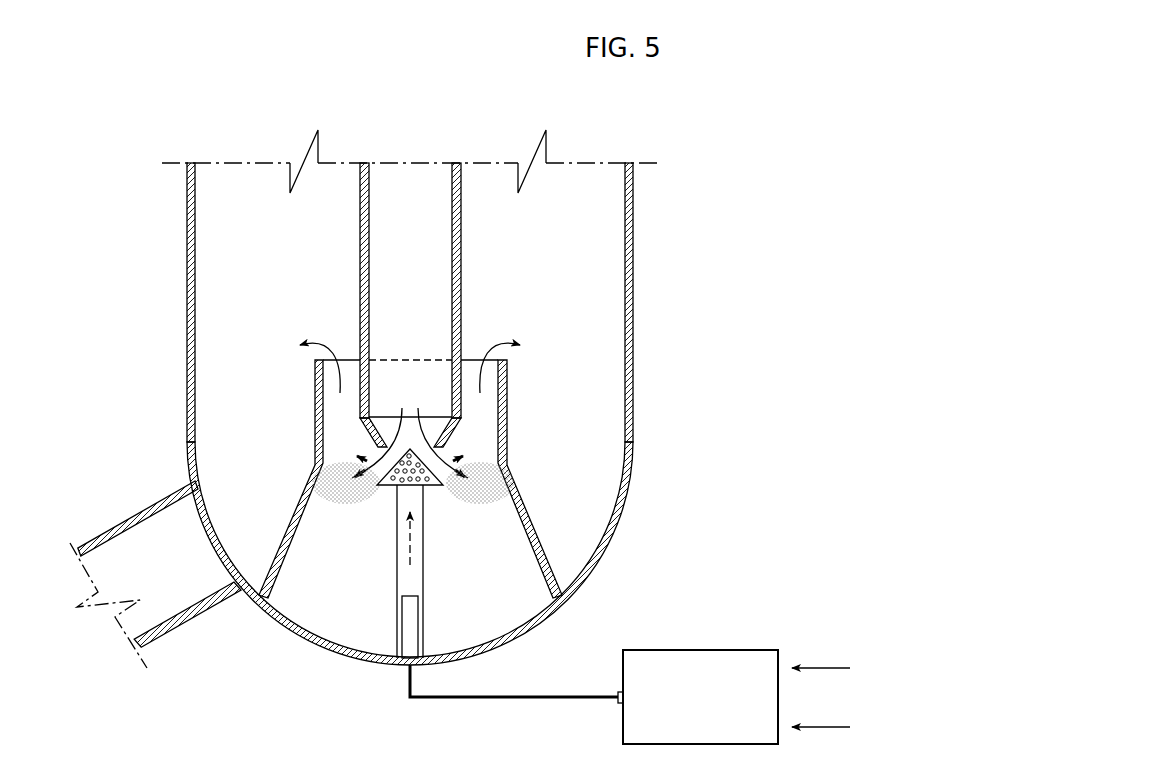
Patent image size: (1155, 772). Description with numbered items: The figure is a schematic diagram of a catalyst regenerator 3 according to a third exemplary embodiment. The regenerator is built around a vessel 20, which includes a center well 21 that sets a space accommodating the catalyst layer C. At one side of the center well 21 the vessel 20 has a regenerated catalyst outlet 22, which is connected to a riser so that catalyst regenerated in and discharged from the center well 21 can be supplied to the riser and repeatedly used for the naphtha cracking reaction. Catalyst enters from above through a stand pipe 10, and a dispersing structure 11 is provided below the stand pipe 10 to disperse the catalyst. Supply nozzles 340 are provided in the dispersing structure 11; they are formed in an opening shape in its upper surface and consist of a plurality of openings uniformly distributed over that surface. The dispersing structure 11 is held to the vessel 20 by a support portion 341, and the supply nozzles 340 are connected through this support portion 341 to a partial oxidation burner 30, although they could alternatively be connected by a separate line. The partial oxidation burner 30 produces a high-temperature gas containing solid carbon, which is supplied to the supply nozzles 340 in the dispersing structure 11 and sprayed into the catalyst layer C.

The catalyst regenerator 3 is at (415, 106).
The stand pipe 10 is at (461, 213).
The dispersing structure 11 is at (428, 470).
The vessel 20 is at (188, 280).
The center well 21 is at (315, 417).
The regenerated catalyst outlet 22 is at (108, 532).
The catalyst layer C is at (493, 487).
The partial oxidation burner 30 is at (707, 653).
The supply nozzles 340 is at (427, 485).
The support portion 341 is at (398, 572).